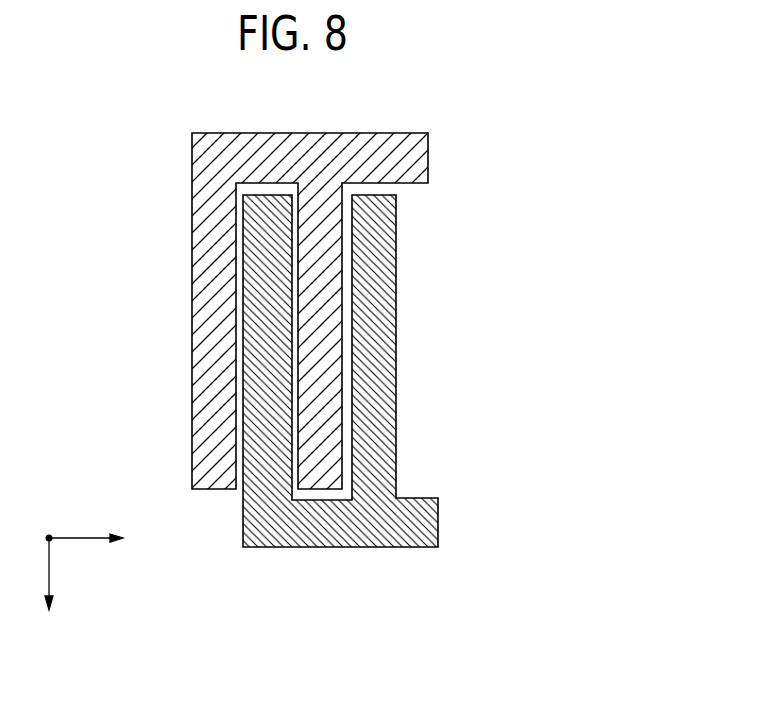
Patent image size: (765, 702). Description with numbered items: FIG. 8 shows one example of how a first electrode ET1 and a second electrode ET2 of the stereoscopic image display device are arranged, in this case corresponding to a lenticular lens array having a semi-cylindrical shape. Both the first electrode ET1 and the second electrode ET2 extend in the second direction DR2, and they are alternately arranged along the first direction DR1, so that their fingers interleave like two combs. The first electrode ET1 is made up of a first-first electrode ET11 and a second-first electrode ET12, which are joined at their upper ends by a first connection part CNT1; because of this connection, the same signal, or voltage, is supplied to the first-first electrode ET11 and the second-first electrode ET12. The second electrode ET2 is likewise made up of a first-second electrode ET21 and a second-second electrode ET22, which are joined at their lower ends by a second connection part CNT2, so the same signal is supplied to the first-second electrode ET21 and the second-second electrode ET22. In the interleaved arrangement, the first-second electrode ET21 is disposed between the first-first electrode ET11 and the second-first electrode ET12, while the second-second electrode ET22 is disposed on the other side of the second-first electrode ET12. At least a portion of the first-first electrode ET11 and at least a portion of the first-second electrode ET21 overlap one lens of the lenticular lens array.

The first electrode ET1 is at (395, 311).
The first-first electrode ET11 is at (200, 332).
The second-first electrode ET12 is at (312, 247).
The first connection part CNT1 is at (207, 183).
The second electrode ET2 is at (464, 371).
The first-second electrode ET21 is at (276, 295).
The second-second electrode ET22 is at (391, 332).
The second connection part CNT2 is at (423, 523).
The first direction DR1 is at (102, 540).
The second direction DR2 is at (50, 590).